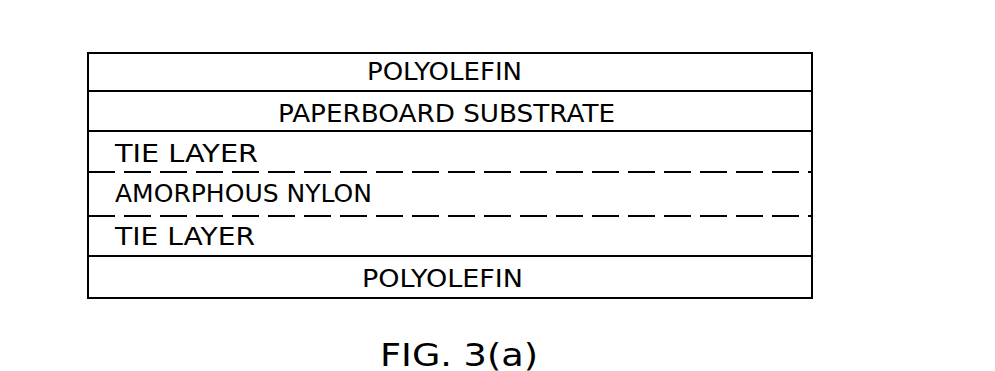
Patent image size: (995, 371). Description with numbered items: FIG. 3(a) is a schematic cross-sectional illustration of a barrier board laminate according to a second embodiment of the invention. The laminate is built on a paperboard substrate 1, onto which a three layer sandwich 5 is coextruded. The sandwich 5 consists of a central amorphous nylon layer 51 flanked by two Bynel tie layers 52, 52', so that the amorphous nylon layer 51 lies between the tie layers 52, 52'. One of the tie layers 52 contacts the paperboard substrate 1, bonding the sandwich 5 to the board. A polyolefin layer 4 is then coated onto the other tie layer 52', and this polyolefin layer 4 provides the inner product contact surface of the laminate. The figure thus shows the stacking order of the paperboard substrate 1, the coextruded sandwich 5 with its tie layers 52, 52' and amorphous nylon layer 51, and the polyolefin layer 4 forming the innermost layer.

The paperboard substrate 1 is at (102, 114).
The polyolefin layer 4 is at (102, 275).
The three layer sandwich 5 is at (417, 193).
The amorphous nylon layer 51 is at (797, 199).
The tie layer 52 is at (483, 151).
The tie layer 52' is at (483, 237).